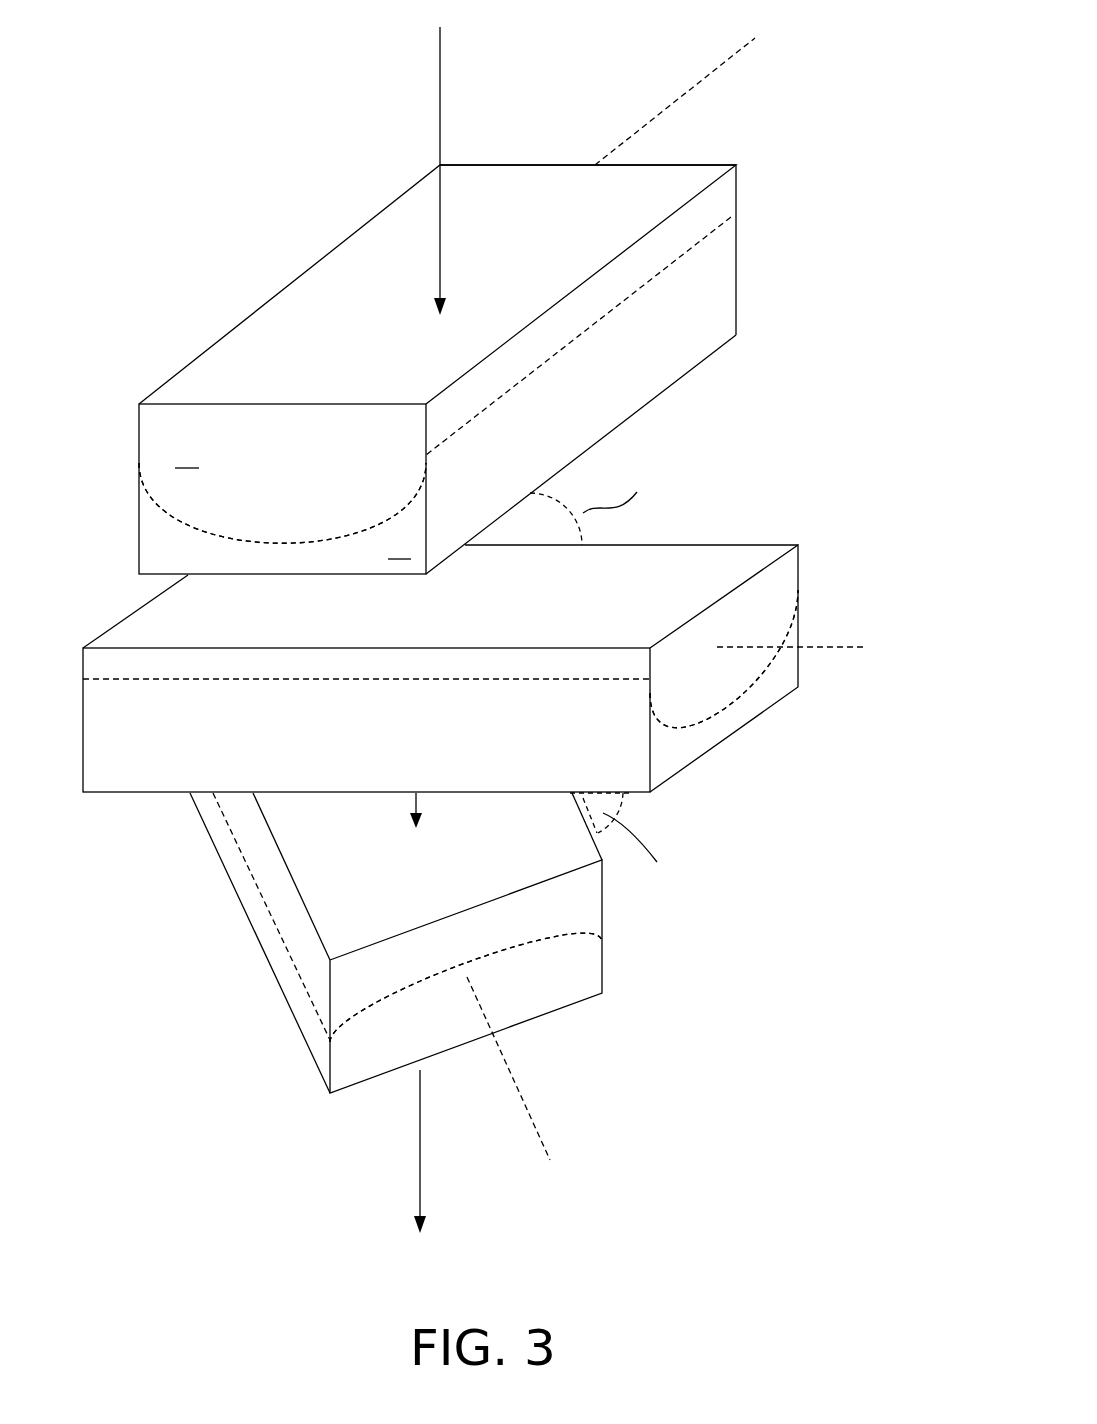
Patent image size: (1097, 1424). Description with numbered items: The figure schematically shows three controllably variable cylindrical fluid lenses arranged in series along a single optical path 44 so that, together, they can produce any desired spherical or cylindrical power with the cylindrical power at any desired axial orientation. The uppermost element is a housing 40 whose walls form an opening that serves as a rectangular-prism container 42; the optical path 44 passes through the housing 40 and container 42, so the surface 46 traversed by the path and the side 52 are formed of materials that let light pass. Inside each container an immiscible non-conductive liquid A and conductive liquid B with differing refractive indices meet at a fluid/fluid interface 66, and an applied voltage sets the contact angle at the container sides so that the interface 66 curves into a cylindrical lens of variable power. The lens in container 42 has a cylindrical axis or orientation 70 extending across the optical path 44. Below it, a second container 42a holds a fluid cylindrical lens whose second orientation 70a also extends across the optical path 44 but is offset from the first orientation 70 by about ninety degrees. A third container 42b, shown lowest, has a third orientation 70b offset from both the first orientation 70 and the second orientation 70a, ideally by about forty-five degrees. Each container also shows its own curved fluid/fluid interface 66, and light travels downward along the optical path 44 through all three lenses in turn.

The housing 40 is at (293, 283).
The container 42 is at (680, 380).
The second container 42a is at (758, 542).
The third container 42b is at (597, 983).
The optical path 44 is at (440, 78).
The surface 46 is at (703, 165).
The side 52 is at (736, 300).
The fluid/fluid interface 66 is at (302, 545).
The cylindrical axis or orientation 70 is at (613, 230).
The second orientation 70a is at (826, 649).
The third orientation 70b is at (534, 1091).